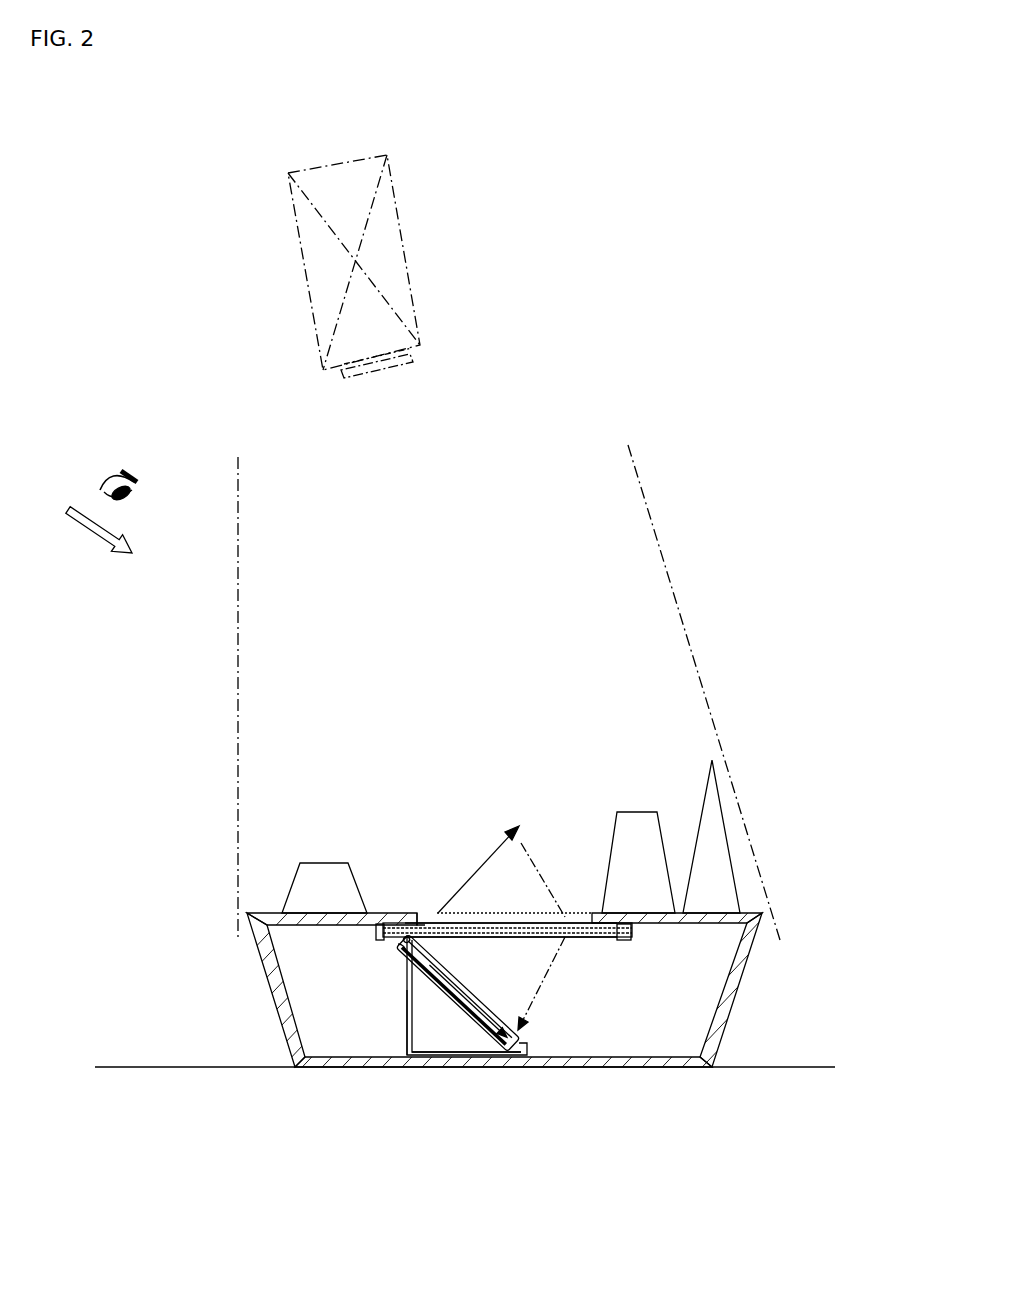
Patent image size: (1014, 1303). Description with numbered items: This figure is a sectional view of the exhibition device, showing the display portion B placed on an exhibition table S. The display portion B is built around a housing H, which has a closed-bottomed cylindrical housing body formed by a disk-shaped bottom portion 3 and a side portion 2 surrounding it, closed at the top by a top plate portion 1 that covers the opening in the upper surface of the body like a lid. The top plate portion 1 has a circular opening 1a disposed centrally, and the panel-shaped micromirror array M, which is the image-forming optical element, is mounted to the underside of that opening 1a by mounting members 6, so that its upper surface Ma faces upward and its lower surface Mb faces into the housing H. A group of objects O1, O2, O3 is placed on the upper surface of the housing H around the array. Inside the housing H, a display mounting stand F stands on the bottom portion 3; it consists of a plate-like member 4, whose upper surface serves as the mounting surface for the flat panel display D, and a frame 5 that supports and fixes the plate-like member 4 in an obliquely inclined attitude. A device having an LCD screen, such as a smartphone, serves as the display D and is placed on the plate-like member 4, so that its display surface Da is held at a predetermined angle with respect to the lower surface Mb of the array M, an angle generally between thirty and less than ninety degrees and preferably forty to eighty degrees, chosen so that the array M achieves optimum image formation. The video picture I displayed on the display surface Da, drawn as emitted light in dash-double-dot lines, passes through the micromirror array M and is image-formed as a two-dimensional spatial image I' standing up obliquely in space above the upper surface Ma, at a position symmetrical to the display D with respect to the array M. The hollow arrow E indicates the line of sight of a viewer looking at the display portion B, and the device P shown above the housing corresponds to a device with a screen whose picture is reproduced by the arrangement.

The top plate portion 1 is at (272, 913).
The circular opening 1a is at (424, 917).
The side portion 2 is at (272, 985).
The bottom portion 3 is at (340, 1057).
The plate-like member 4 is at (445, 988).
The frame 5 is at (406, 1025).
The mounting members 6 is at (375, 933).
The portable terminal P is at (412, 248).
The line of sight E is at (101, 521).
The display portion B is at (578, 875).
The object O1 is at (324, 888).
The object O2 is at (638, 862).
The object O3 is at (711, 836).
The micromirror array M is at (584, 942).
The upper surface Ma is at (433, 918).
The lower surface Mb is at (617, 940).
The spatial image I' is at (501, 871).
The video picture I is at (468, 1001).
The flat panel display D is at (462, 1000).
The display surface Da is at (524, 1040).
The mounting stand F is at (404, 1003).
The housing H is at (745, 993).
The exhibition table S is at (465, 1093).